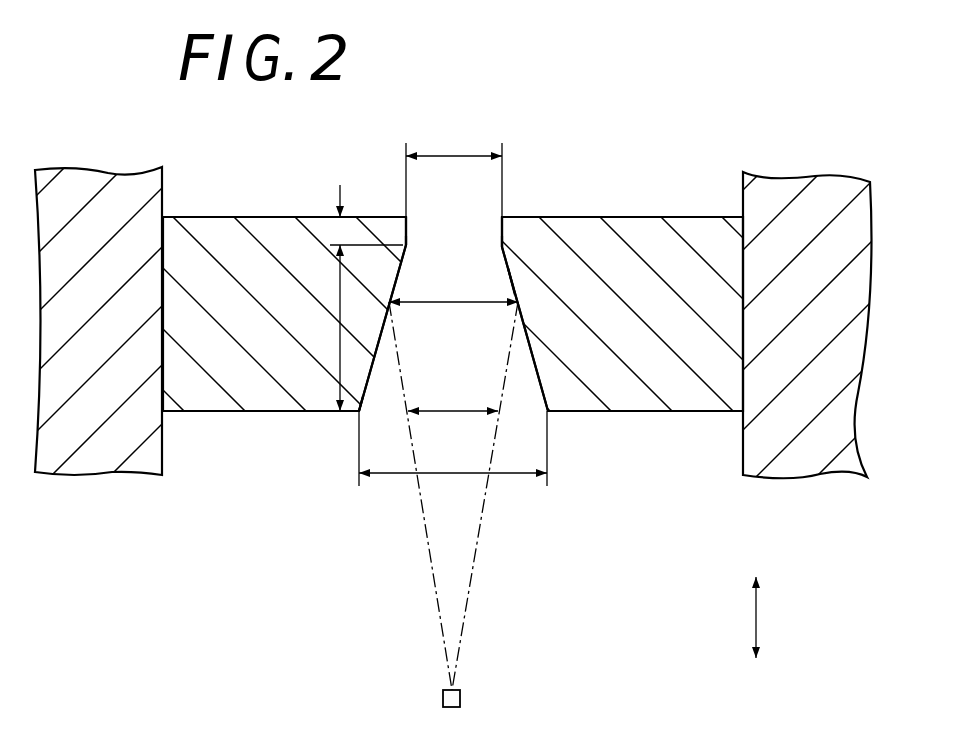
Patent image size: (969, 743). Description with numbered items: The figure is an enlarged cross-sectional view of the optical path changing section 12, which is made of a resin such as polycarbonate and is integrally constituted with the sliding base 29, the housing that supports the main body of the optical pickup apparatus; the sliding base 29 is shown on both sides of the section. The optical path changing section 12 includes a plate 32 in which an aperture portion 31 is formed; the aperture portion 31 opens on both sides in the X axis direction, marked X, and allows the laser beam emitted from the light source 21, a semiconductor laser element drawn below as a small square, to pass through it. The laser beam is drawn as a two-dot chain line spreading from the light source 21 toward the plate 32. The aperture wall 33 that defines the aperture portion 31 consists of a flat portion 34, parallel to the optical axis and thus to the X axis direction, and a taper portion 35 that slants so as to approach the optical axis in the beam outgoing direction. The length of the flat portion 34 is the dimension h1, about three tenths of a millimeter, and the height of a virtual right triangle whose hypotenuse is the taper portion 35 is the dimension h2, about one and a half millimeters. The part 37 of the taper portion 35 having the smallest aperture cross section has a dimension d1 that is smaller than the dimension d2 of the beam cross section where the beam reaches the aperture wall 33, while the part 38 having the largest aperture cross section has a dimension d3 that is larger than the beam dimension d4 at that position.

The optical path changing section 12 is at (628, 132).
The light source 21 is at (461, 698).
The sliding base 29 is at (90, 182).
The aperture portion 31 is at (465, 218).
The plate 32 is at (644, 218).
The aperture wall 33 is at (460, 237).
The flat portion 34 is at (502, 240).
The taper portion 35 is at (512, 284).
The part of the taper portion having the smallest aperture cross section 37 is at (416, 244).
The part of the taper portion having the largest aperture cross section 38 is at (393, 406).
The dimension of the smallest aperture cross section d1 is at (452, 156).
The dimension of the laser beam cross section at the aperture wall d2 is at (452, 302).
The dimension of the largest aperture cross section d3 is at (452, 473).
The dimension of the laser beam cross section at the largest aperture part d4 is at (452, 411).
The length dimension of the flat portion h1 is at (334, 217).
The height dimension of the taper portion h2 is at (340, 299).
The X axis direction X is at (756, 617).